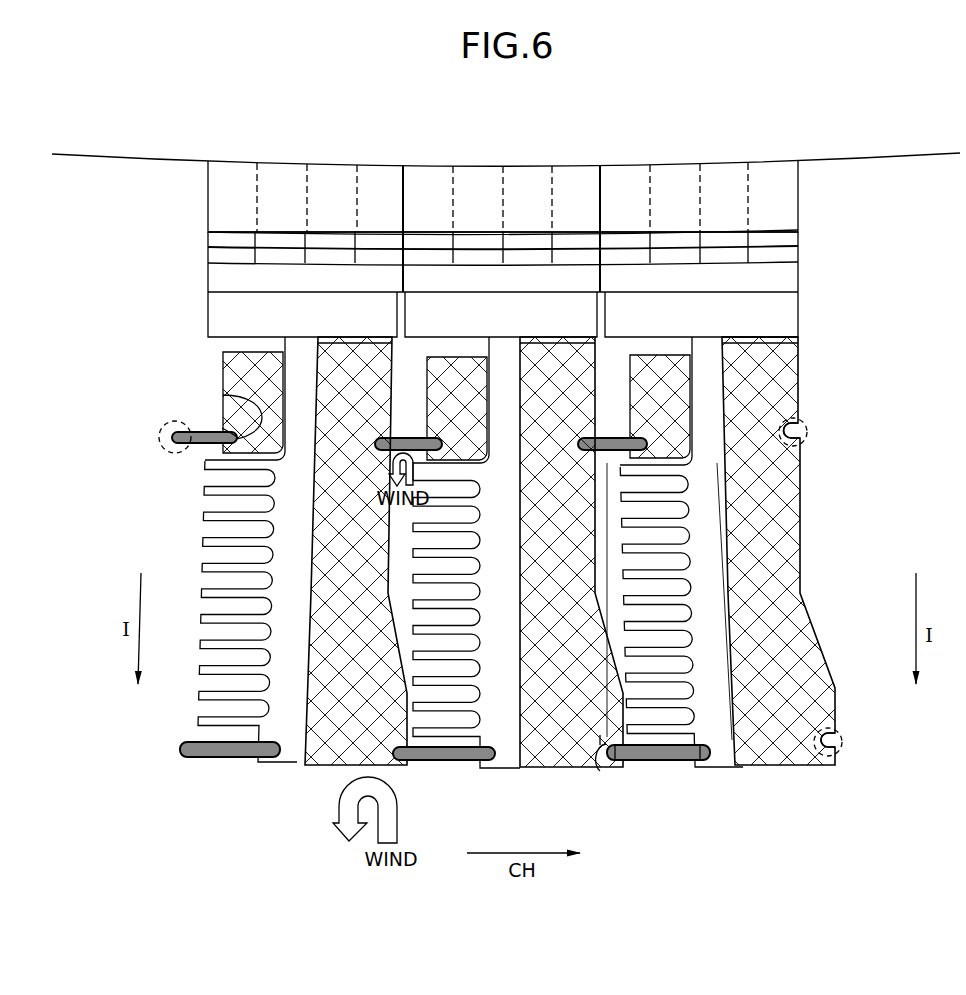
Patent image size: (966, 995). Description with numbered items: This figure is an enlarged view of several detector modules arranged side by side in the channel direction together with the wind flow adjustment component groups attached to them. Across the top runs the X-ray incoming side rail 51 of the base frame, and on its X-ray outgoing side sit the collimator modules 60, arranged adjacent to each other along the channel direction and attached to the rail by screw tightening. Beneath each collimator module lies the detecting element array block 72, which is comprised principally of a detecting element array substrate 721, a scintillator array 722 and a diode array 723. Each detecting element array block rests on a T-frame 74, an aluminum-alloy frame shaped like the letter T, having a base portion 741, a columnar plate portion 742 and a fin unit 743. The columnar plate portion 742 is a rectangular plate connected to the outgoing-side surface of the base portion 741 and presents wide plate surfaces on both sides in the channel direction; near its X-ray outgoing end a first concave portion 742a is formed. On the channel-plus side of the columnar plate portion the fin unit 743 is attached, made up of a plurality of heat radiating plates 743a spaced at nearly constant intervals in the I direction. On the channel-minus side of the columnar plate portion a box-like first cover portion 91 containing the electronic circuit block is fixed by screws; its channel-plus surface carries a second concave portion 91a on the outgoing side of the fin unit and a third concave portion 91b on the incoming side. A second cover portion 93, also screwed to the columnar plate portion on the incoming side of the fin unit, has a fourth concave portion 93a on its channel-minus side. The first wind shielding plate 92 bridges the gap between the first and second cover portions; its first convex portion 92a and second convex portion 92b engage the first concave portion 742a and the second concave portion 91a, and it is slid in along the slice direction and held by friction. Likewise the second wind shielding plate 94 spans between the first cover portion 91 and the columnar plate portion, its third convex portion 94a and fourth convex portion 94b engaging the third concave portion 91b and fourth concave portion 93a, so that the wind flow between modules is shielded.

The X-ray incoming side rail 51 is at (934, 143).
The collimator module 60 is at (208, 190).
The detecting element array block 72 is at (533, 258).
The detecting element array substrate 721 is at (546, 280).
The scintillator array 722 is at (800, 236).
The diode array 723 is at (800, 249).
The T-frame 74 is at (208, 310).
The base portion 741 is at (760, 324).
The columnar plate portion 742 is at (714, 482).
The first concave portion 742a is at (723, 765).
The fin unit 743 is at (605, 595).
The heat radiating plate 743a is at (662, 716).
The first cover portion 91 is at (328, 766).
The second concave portion 91a is at (843, 742).
The third concave portion 91b is at (810, 434).
The first wind shielding plate 92 is at (238, 760).
The first convex portion 92a is at (690, 762).
The second convex portion 92b is at (632, 763).
The second cover portion 93 is at (238, 363).
The fourth concave portion 93a is at (228, 402).
The second wind shielding plate 94 is at (200, 446).
The third convex portion 94a is at (222, 430).
The fourth convex portion 94b is at (165, 447).